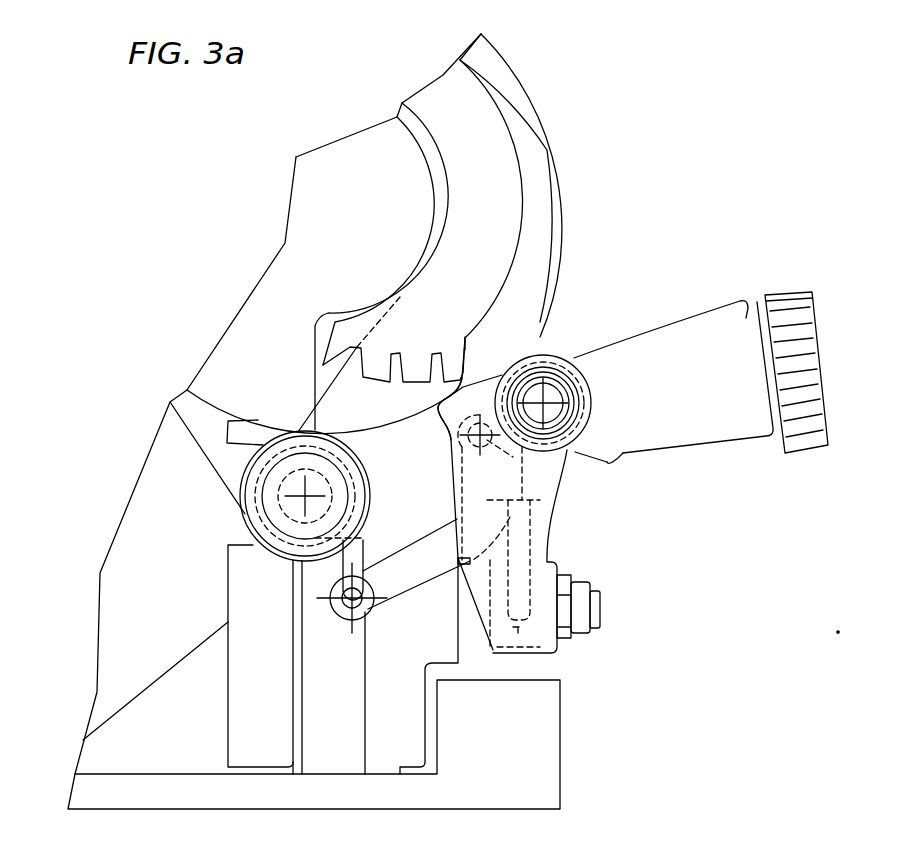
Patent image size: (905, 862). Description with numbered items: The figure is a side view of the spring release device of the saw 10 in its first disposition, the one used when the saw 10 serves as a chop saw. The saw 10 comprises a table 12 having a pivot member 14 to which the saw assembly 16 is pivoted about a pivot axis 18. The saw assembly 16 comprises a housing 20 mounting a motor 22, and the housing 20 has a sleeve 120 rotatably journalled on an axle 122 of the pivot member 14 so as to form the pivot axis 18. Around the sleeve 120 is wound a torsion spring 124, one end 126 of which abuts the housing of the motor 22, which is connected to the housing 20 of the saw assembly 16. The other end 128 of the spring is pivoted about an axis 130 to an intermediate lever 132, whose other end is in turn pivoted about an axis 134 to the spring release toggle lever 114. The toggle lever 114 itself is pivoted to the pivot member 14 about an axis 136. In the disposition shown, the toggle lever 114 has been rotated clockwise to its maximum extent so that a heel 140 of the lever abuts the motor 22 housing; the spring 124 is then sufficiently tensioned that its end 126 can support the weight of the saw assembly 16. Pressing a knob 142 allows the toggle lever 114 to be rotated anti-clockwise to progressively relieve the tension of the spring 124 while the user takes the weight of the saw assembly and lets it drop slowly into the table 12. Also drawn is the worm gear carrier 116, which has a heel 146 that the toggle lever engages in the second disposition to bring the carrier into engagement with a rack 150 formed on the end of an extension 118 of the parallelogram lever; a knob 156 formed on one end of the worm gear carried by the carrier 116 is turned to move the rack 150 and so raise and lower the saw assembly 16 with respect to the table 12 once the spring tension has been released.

The saw 10 is at (674, 72).
The table 12 is at (113, 773).
The pivot member 14 is at (402, 493).
The saw assembly 16 is at (520, 50).
The pivot axis 18 is at (313, 485).
The housing 20 is at (188, 412).
The motor 22 is at (550, 238).
The spring release toggle lever 114 is at (547, 525).
The worm gear carrier 116 is at (740, 298).
The extension 118 is at (487, 135).
The sleeve 120 is at (267, 493).
The axle 122 is at (298, 503).
The torsion spring 124 is at (253, 510).
The end of the spring 126 is at (232, 430).
The other end of the spring 128 is at (337, 610).
The axis 130 is at (367, 610).
The intermediate lever 132 is at (400, 583).
The axis 134 is at (515, 458).
The axis 136 is at (550, 398).
The heel 140 is at (438, 407).
The knob 142 is at (532, 392).
The heel 146 is at (607, 466).
The rack 150 is at (388, 380).
The knob 156 is at (797, 330).